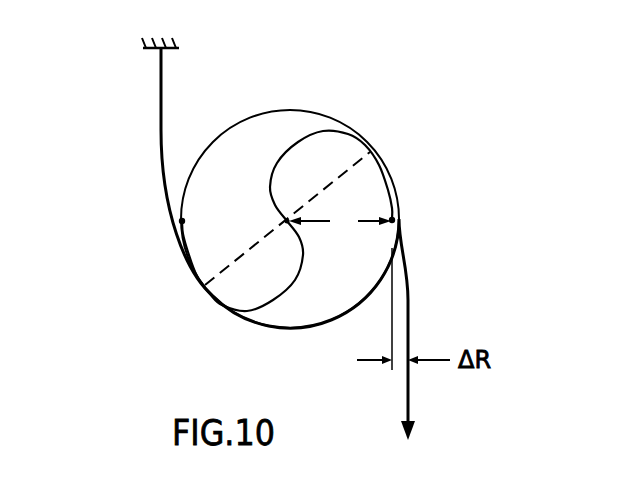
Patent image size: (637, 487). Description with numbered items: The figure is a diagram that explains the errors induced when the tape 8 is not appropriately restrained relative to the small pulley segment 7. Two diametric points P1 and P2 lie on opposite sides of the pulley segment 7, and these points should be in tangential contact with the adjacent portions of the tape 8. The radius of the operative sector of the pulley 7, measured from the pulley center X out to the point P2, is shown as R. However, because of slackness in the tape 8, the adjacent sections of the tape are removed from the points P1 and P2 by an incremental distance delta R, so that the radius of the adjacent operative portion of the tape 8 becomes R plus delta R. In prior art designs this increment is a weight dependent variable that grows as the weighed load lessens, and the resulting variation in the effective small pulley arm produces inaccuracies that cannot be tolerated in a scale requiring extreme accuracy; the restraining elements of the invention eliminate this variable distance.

The small pulley segment 7 is at (260, 135).
The tape 8 is at (162, 128).
The diametric point P1 is at (185, 221).
The diametric point P2 is at (391, 222).
The pulley axis X is at (289, 218).
The radius of the operative sector of the pulley R is at (340, 222).